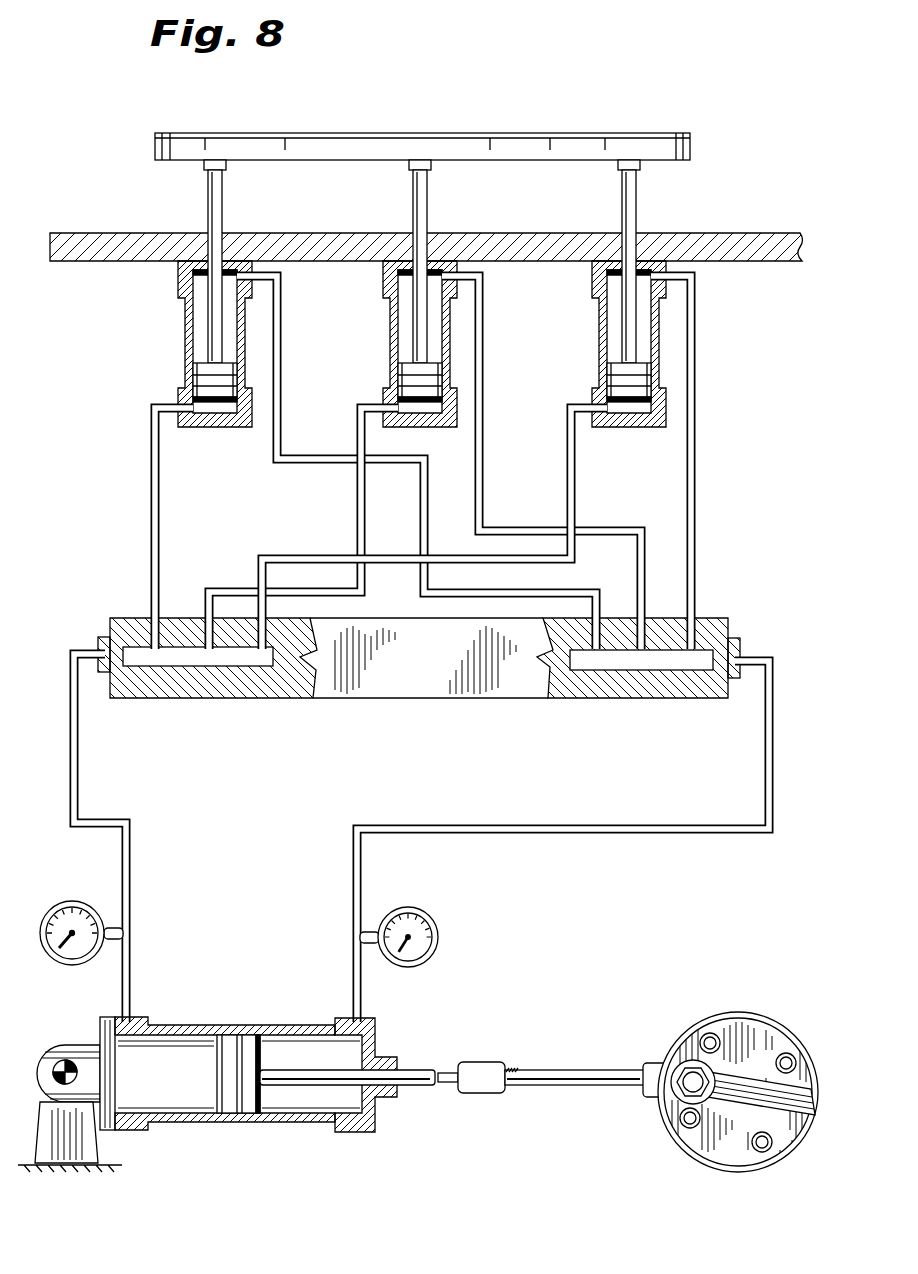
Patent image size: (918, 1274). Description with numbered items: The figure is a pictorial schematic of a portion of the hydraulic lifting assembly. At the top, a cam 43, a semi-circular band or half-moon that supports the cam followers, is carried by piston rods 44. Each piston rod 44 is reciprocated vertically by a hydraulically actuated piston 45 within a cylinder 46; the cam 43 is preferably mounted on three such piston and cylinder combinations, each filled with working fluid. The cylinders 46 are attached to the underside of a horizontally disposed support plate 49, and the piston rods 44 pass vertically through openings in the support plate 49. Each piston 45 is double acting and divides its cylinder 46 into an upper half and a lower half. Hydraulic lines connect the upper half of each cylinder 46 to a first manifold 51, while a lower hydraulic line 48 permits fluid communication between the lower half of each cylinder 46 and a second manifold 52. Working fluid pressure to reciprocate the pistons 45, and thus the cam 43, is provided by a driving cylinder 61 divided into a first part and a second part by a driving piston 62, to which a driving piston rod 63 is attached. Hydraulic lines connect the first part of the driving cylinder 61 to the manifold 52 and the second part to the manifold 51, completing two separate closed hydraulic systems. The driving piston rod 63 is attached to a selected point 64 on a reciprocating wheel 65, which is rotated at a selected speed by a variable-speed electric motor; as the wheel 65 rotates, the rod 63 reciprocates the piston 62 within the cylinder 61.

The cam 43 is at (502, 137).
The piston rod 44 is at (212, 199).
The piston 45 is at (194, 382).
The cylinder 46 is at (185, 339).
The lower hydraulic line 48 is at (213, 588).
The support plate 49 is at (690, 234).
The first manifold 51 is at (705, 645).
The second manifold 52 is at (132, 640).
The driving cylinder 61 is at (176, 1132).
The driving piston 62 is at (252, 1132).
The driving piston rod 63 is at (410, 1090).
The selected point 64 is at (720, 1065).
The reciprocating wheel 65 is at (748, 1172).